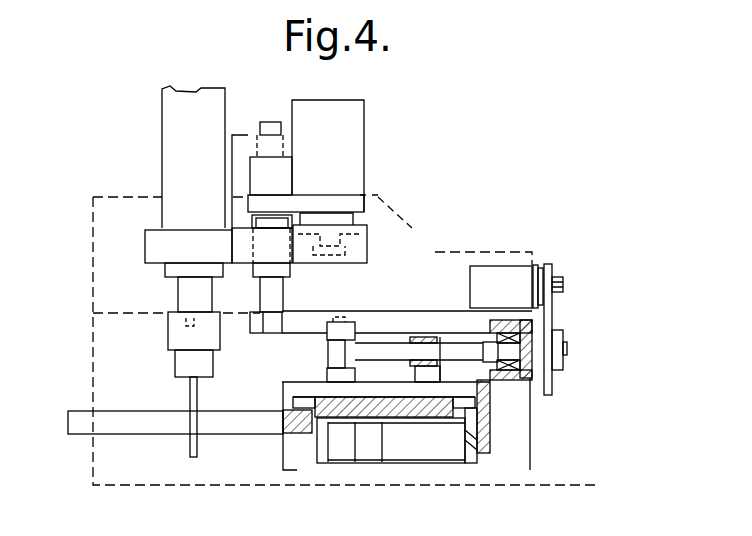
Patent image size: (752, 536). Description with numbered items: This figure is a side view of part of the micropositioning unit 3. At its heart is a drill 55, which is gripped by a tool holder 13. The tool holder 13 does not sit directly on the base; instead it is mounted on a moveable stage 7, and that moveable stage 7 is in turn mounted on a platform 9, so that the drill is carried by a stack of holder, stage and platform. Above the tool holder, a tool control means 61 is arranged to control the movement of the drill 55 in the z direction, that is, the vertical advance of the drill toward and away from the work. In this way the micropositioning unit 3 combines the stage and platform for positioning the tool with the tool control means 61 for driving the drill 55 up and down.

The micropositioning unit 3 is at (578, 339).
The moveable stage 7 is at (390, 260).
The platform 9 is at (513, 426).
The tool holder 13 is at (158, 245).
The drill 55 is at (190, 390).
The tool control means 61 is at (300, 207).